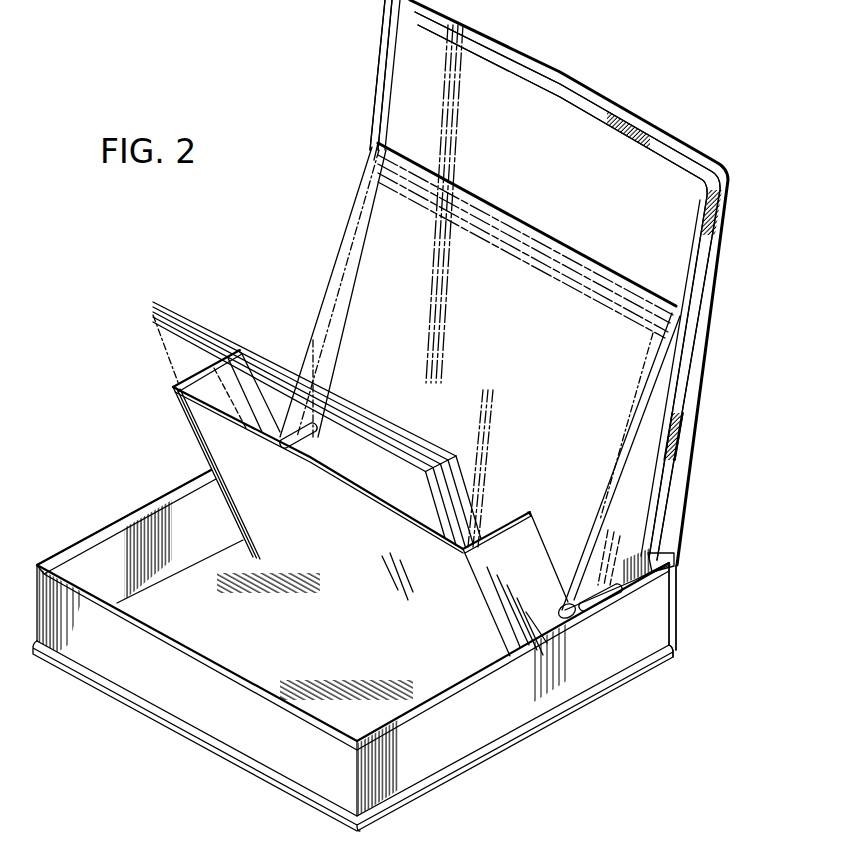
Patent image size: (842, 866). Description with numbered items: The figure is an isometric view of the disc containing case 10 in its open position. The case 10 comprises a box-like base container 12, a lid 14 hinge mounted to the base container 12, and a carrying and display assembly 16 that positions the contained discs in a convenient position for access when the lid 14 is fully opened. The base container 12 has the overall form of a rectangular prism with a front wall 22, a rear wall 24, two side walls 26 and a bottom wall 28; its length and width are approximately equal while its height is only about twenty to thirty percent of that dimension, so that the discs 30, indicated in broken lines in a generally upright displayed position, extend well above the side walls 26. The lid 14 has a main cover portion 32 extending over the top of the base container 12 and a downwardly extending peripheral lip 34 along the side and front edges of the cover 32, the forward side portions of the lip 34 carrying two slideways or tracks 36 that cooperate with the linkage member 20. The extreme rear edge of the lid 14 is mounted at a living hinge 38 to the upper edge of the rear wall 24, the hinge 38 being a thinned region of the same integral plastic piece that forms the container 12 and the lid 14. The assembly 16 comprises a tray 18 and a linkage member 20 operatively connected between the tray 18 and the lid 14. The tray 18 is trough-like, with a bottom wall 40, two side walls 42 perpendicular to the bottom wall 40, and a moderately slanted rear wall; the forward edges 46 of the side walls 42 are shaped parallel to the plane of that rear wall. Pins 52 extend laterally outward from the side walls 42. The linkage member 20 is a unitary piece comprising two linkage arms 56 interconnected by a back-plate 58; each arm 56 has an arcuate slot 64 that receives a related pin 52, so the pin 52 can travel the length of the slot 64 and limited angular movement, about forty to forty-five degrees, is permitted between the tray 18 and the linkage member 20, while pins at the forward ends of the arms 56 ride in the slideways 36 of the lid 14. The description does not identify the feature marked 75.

The disc containing case 10 is at (250, 244).
The base container 12 is at (493, 764).
The lid 14 is at (716, 294).
The carrying and display assembly 16 is at (282, 311).
The tray 18 is at (200, 454).
The linkage member 20 is at (654, 470).
The front wall 22 is at (219, 721).
The rear wall 24 is at (673, 597).
The side walls 26 is at (487, 728).
The bottom wall 28 is at (294, 663).
The discs 30 is at (516, 220).
The main cover portion 32 is at (591, 137).
The peripheral lip 34 is at (574, 95).
The slideways 36 is at (388, 95).
The hinge 38 is at (670, 566).
The bottom wall 40 is at (354, 558).
The side walls 42 is at (532, 573).
The forward edges 46 is at (527, 512).
The pins 52 is at (576, 618).
The linkage arms 56 is at (330, 287).
The back-plate 58 is at (474, 316).
The arcuate slot 64 is at (316, 440).
The tray bottom corner 75 is at (674, 654).